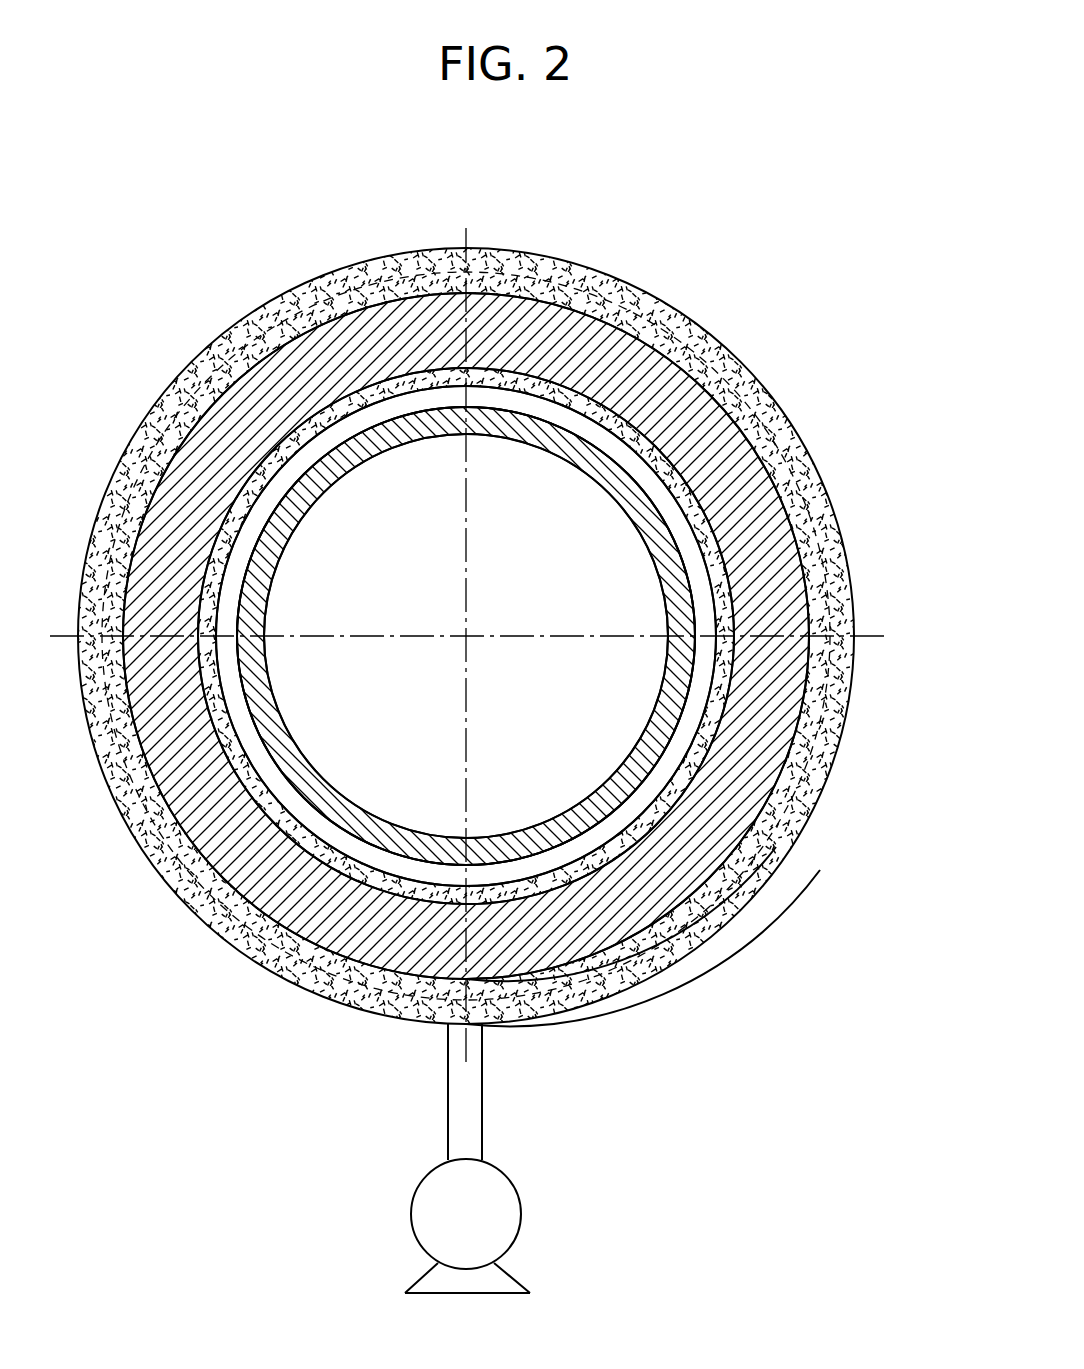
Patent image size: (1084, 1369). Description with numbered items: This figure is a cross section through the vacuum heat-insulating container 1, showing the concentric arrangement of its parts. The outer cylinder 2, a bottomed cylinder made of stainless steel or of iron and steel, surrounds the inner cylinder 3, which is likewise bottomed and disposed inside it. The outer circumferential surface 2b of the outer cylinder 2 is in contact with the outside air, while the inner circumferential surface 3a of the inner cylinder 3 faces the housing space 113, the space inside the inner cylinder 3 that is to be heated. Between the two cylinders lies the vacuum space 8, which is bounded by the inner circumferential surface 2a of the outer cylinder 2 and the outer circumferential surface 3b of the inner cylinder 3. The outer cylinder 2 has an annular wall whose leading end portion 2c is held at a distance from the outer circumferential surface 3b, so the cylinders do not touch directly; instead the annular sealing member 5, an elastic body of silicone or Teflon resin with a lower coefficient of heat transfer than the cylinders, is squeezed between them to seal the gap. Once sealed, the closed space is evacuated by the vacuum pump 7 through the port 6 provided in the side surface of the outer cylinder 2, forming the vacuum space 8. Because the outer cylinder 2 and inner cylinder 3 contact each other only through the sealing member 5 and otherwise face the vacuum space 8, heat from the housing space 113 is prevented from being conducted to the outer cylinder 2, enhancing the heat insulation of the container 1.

The vacuum heat-insulating container 1 is at (368, 190).
The outer cylinder 2 is at (697, 940).
The inner circumferential surface of the outer cylinder 2a is at (620, 948).
The outer circumferential surface of the outer cylinder 2b is at (649, 991).
The leading end portion 2c is at (621, 818).
The inner cylinder 3 is at (667, 663).
The inner circumferential surface of the inner cylinder 3a is at (645, 723).
The outer circumferential surface of the inner cylinder 3b is at (683, 741).
The sealing member 5 is at (760, 556).
The port 6 is at (472, 1112).
The vacuum pump 7 is at (508, 1247).
The vacuum space 8 is at (675, 520).
The housing space 113 is at (570, 547).